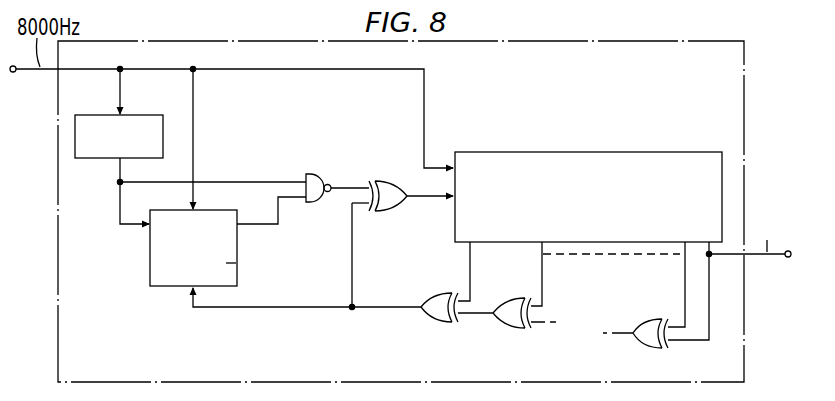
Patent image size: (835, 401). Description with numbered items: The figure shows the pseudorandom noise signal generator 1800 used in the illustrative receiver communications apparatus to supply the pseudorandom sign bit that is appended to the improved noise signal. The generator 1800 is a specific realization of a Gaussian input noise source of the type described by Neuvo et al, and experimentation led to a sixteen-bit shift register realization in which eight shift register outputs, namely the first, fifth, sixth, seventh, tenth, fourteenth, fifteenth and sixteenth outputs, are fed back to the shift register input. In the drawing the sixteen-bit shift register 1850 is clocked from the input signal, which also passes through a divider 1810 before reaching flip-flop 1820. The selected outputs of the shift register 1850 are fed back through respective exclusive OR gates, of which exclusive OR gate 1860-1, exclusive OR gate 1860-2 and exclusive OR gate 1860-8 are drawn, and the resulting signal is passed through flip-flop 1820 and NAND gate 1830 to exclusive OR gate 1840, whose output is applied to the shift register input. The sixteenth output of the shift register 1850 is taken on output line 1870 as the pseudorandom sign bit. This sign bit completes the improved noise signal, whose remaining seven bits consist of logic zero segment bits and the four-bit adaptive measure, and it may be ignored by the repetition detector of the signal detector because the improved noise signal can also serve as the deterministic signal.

The pseudorandom signal generator 1800 is at (673, 42).
The divide-by-16 counter 1810 is at (150, 115).
The flip-flop 1820 is at (149, 259).
The NAND gate 1830 is at (313, 173).
The exclusive OR gate 1840 is at (381, 178).
The 16 bit shift register 1850 is at (573, 153).
The exclusive OR gate 1860-1 is at (430, 324).
The exclusive OR gate 1860-2 is at (498, 328).
The exclusive OR gate 1860-8 is at (635, 345).
The sign bit output line 1870 is at (725, 257).